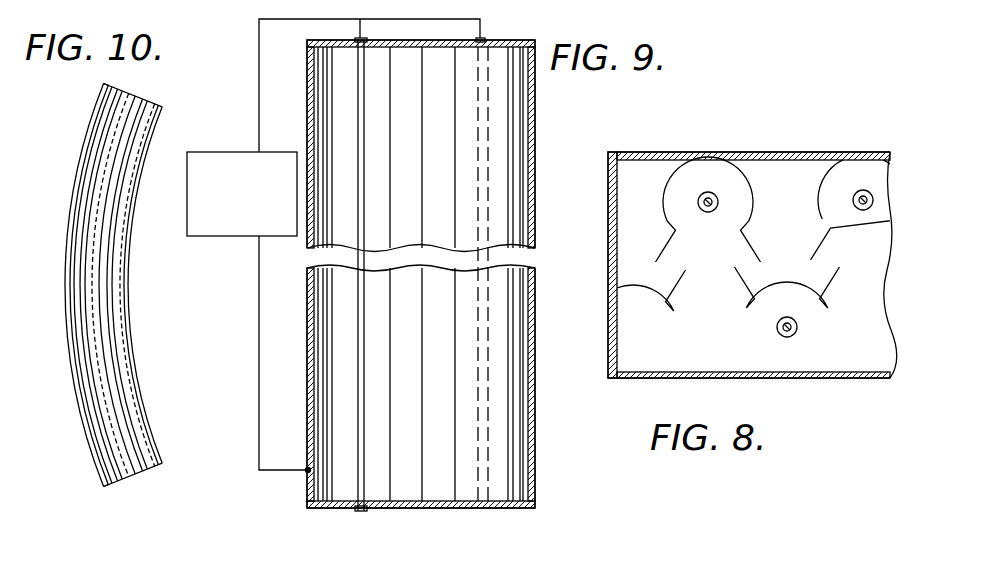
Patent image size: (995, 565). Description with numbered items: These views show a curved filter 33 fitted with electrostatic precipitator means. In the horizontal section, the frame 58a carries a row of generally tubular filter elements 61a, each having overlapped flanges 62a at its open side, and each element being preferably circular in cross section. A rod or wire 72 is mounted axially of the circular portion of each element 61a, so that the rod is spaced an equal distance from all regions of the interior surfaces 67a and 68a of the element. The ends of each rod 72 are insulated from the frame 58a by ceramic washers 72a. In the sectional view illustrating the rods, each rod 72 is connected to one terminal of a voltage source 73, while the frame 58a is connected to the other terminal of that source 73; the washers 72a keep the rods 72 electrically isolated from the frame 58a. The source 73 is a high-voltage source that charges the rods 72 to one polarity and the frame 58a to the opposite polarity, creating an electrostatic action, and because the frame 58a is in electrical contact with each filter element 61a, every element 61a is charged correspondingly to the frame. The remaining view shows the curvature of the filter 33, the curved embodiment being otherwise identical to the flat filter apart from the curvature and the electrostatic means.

In FIG. 10, the electrode assembly 33 is at (90, 482).
In FIG. 10, the frame 58a is at (160, 462).
In FIG. 9, the frame 58a is at (308, 494).
In FIG. 8, the frame 58a is at (632, 378).
In FIG. 10, the tubular filter element 61a is at (128, 338).
In FIG. 8, the tubular filter element 61a is at (752, 197).
In FIG. 10, the overlapped flange 62a is at (130, 478).
In FIG. 8, the interior surface 67a is at (708, 158).
In FIG. 8, the interior surface 68a is at (790, 364).
In FIG. 9, the rod 72 is at (356, 492).
In FIG. 8, the rod 72 is at (708, 212).
In FIG. 9, the ceramic washer 72a is at (368, 42).
In FIG. 8, the ceramic washer 72a is at (872, 197).
In FIG. 9, the voltage source 73 is at (222, 152).